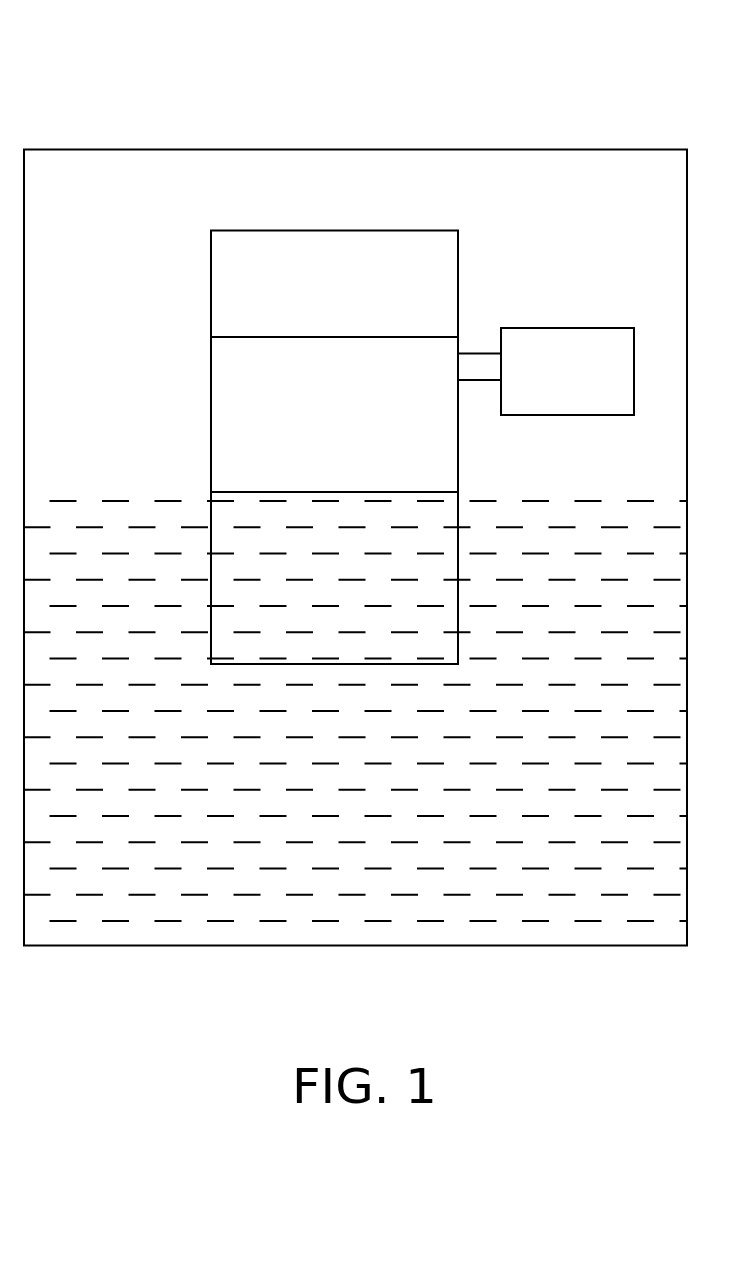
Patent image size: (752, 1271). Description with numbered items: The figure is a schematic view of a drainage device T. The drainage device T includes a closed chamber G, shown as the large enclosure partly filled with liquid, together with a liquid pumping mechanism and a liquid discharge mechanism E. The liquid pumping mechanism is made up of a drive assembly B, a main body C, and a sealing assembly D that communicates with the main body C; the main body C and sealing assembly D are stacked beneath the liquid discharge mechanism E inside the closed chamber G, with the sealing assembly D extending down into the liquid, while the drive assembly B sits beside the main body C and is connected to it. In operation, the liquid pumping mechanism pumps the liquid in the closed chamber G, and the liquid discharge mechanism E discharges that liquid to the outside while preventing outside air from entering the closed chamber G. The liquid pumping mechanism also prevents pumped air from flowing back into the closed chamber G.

The drainage device T is at (312, 38).
The closed chamber G is at (597, 185).
The liquid discharge mechanism E is at (334, 284).
The main body C is at (334, 414).
The sealing assembly D is at (334, 578).
The drive assembly B is at (546, 371).